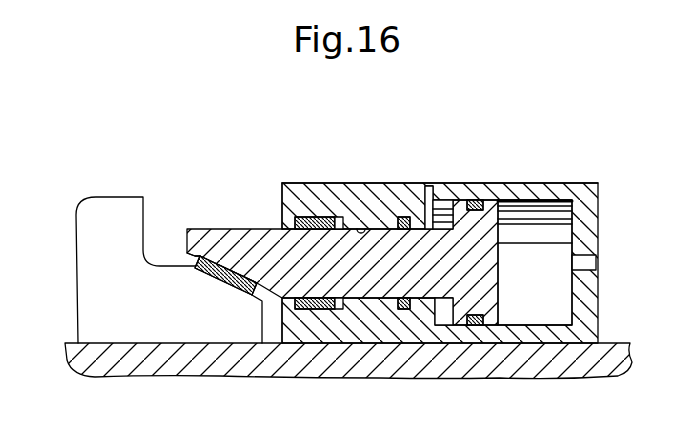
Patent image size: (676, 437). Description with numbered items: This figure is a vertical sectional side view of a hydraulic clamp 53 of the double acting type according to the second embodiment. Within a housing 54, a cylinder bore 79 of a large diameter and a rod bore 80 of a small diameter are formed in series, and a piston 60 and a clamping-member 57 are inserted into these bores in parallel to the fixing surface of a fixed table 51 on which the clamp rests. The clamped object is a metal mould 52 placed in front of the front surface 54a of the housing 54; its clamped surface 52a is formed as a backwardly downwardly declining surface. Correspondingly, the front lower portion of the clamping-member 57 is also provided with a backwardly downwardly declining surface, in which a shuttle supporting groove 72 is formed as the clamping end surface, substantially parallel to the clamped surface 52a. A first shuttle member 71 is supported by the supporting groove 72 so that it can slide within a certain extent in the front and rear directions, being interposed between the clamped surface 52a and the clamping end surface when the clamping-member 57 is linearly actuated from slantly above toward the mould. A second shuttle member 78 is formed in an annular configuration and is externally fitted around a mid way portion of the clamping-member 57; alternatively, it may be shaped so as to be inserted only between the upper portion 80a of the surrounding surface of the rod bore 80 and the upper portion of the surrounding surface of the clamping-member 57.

The fixed table 51 is at (365, 370).
The metal mould 52 is at (77, 238).
The clamped surface 52a is at (218, 279).
The hydraulic clamp 53 is at (464, 177).
The housing 54 is at (404, 178).
The front surface 54a is at (281, 197).
The clamping-member 57 is at (258, 224).
The piston 60 is at (490, 264).
The first shuttle member 71 is at (228, 272).
The shuttle supporting groove 72 is at (206, 254).
The second shuttle member 78 is at (308, 217).
The cylinder bore 79 is at (540, 200).
The rod bore 80 is at (368, 292).
The upper portion of the surrounding surface of the rod bore 80a is at (368, 228).